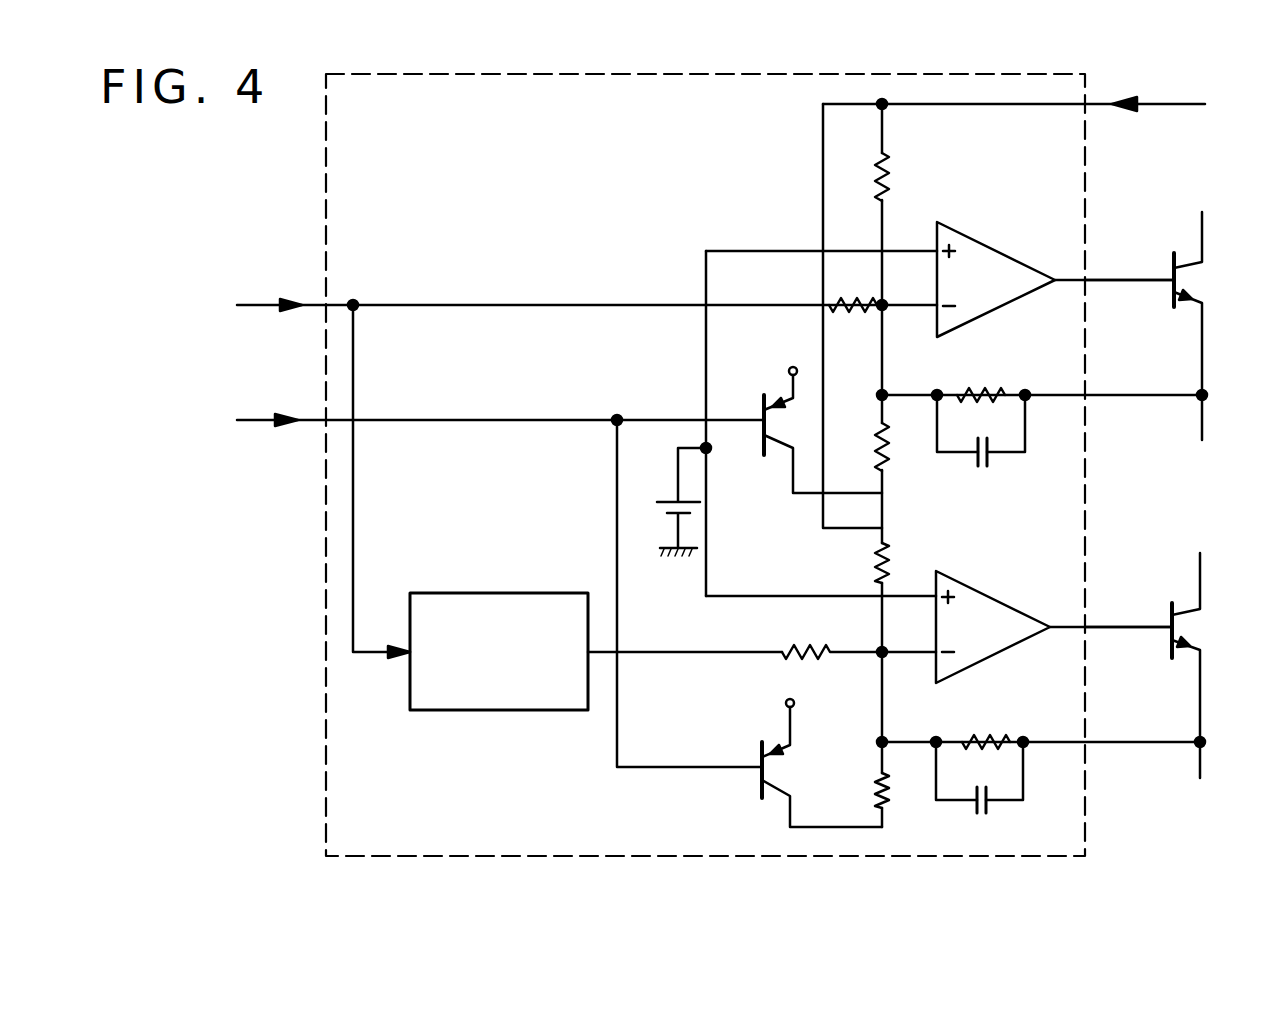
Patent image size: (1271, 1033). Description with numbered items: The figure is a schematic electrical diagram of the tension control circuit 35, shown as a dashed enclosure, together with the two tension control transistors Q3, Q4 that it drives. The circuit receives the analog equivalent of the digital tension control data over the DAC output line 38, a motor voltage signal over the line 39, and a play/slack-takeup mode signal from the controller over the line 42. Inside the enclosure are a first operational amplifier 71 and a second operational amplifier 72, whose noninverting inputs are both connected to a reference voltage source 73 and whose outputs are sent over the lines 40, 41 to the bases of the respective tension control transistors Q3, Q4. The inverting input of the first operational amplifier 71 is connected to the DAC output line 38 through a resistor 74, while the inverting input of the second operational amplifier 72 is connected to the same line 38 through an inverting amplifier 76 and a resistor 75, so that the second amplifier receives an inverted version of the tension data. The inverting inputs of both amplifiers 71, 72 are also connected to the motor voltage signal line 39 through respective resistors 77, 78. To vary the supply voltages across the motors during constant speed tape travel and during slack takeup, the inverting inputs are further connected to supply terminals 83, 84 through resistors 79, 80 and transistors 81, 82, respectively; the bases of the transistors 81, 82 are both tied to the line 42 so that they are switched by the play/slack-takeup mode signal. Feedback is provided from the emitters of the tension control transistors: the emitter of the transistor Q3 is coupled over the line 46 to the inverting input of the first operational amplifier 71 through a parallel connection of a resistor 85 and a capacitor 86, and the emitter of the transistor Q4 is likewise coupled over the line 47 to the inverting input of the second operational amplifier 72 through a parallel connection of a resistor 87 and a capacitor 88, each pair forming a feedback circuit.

The tension control circuit 35 is at (327, 165).
The line 38 is at (302, 305).
The line 39 is at (1105, 108).
The line 40 is at (1118, 278).
The line 41 is at (1116, 625).
The line 42 is at (308, 422).
The line 46 is at (1120, 393).
The line 47 is at (1132, 740).
The first operational amplifier 71 is at (1015, 258).
The second operational amplifier 72 is at (1026, 621).
The reference voltage source 73 is at (667, 500).
The resistor 74 is at (853, 320).
The resistor 75 is at (801, 648).
The inverting amplifier 76 is at (499, 593).
The resistor 77 is at (895, 170).
The resistor 78 is at (870, 560).
The resistor 79 is at (873, 455).
The resistor 80 is at (874, 797).
The transistor 81 is at (761, 435).
The transistor 82 is at (760, 784).
The supply terminal 83 is at (789, 371).
The supply terminal 84 is at (786, 705).
The resistor 85 is at (982, 393).
The capacitor 86 is at (988, 462).
The resistor 87 is at (985, 740).
The capacitor 88 is at (990, 806).
The tension control transistor Q3 is at (1190, 266).
The tension control transistor Q4 is at (1188, 613).